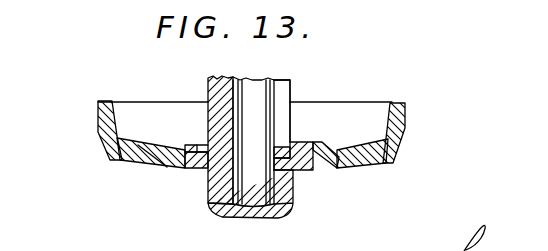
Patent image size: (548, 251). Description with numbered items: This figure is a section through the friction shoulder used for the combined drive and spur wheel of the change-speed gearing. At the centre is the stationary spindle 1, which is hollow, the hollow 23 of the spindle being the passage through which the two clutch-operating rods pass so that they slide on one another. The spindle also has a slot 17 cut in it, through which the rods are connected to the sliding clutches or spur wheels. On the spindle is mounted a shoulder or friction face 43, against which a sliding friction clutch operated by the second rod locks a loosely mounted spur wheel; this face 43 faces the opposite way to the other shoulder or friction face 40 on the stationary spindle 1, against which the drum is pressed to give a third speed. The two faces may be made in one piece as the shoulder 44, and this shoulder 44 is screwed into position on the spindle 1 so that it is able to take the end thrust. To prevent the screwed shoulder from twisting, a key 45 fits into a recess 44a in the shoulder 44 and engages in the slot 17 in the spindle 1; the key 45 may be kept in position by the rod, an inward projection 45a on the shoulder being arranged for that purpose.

The stationary spindle 1 is at (223, 204).
The hollow of the stationary spindle 23 is at (253, 98).
The slot in the spindle 17 is at (279, 110).
The shoulder or friction face 43 is at (98, 115).
The shoulder or friction face 40 is at (112, 138).
The key 45 is at (192, 150).
The inward projection on the shoulder 45a is at (279, 160).
The recess in the shoulder 44a is at (318, 153).
The shoulder 44 is at (401, 143).